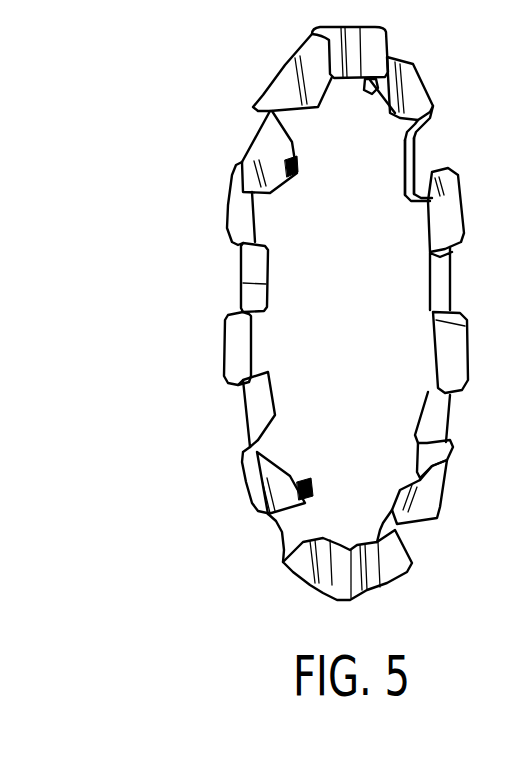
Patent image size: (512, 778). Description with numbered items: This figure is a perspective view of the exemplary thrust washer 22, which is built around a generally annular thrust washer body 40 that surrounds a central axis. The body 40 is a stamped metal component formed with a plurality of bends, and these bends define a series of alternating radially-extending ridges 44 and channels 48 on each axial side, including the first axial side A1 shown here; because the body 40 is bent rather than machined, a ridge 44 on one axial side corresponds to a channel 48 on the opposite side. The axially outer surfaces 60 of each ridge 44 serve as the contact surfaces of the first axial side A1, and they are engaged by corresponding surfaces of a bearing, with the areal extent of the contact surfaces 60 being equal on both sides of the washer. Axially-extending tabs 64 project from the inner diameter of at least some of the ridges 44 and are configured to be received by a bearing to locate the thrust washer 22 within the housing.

The thrust washer 22 is at (198, 165).
The thrust washer body 40 is at (232, 306).
The ridges 44 is at (263, 405).
The channels 48 is at (243, 423).
The axially outer surfaces 60 is at (253, 273).
The axially-extending tabs 64 is at (292, 166).
The first axial side A1 is at (450, 210).